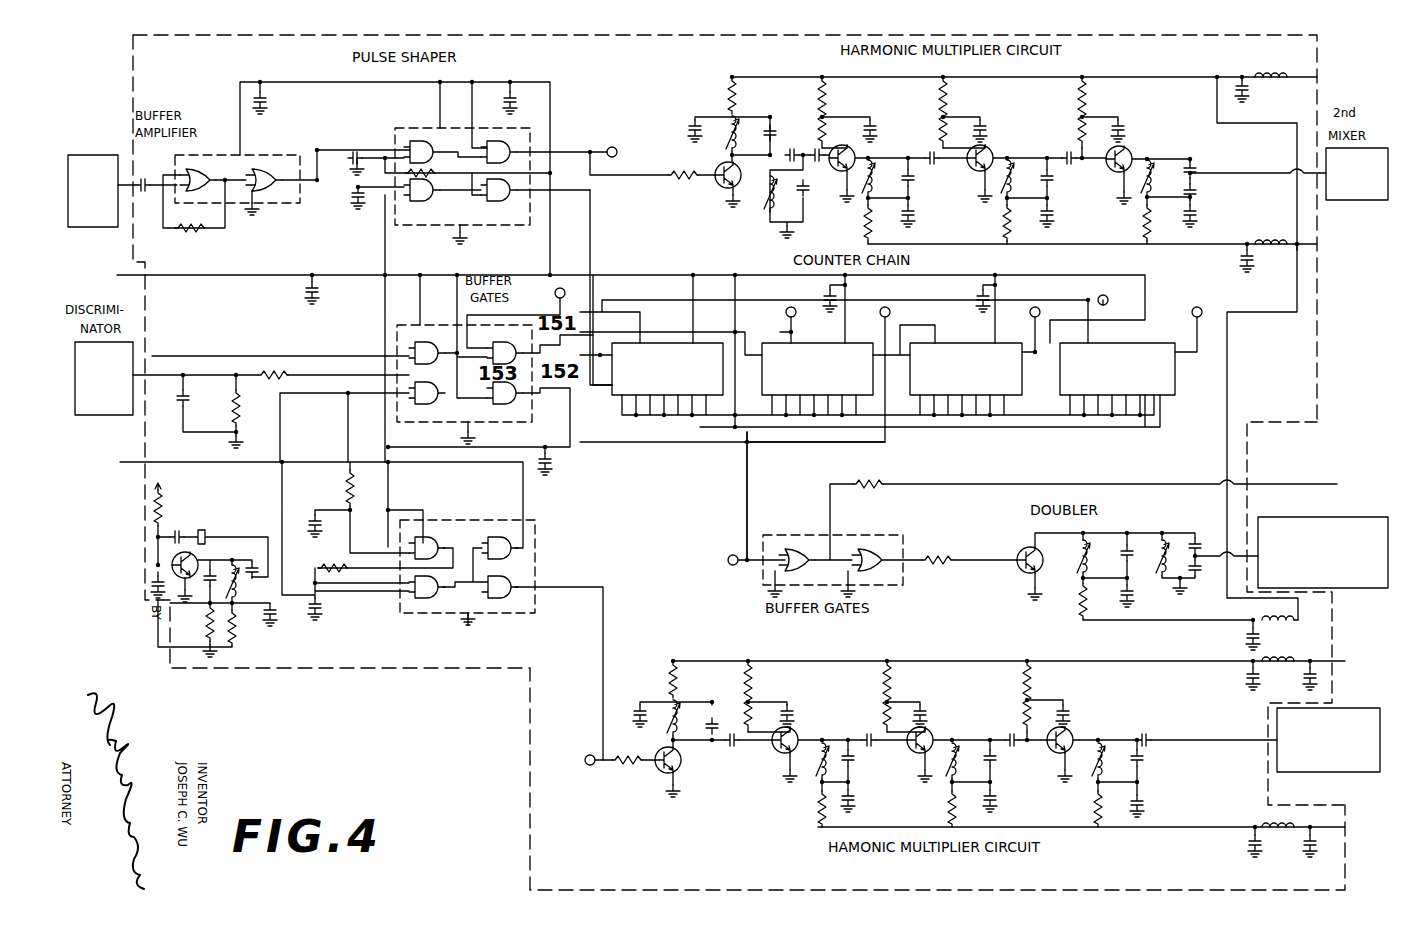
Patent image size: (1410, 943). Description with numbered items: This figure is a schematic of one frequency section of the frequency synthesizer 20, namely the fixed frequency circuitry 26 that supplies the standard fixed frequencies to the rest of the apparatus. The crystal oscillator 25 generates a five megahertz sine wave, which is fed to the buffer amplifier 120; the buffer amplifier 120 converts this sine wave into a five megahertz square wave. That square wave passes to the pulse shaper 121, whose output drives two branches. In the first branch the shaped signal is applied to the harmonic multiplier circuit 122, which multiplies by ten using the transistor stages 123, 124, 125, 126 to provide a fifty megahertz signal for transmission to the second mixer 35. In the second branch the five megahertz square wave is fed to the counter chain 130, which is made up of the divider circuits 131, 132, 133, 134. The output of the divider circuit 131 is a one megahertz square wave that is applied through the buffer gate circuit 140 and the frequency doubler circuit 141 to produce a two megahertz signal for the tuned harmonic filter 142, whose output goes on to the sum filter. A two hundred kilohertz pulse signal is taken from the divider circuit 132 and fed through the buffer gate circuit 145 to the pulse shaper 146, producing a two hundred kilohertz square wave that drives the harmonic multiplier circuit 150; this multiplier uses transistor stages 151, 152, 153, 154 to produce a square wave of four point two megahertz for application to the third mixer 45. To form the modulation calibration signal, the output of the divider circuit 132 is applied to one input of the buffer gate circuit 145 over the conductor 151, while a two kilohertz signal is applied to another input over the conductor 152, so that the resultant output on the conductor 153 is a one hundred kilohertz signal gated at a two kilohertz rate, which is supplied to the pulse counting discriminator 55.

The frequency synthesizer 20 is at (1341, 345).
The crystal oscillator 25 is at (108, 203).
The fixed frequency circuitry 26 is at (1305, 420).
The second mixer 35 is at (1372, 187).
The third mixer 45 is at (1305, 772).
The pulse counting discriminator 55 is at (120, 390).
The buffer amplifier 120 is at (288, 197).
The pulse shaper 121 is at (503, 236).
The harmonic multiplier circuit 122 is at (773, 77).
The transistor stage 123 is at (720, 190).
The transistor stage 124 is at (838, 175).
The transistor stage 125 is at (988, 148).
The transistor stage 126 is at (1130, 150).
The counter chain 130 is at (1073, 267).
The divider circuit 131 is at (698, 381).
The divider circuit 132 is at (848, 381).
The divider circuit 133 is at (996, 381).
The divider circuit 134 is at (1148, 381).
The buffer gate circuit 140 is at (880, 535).
The frequency doubler circuit 141 is at (1158, 532).
The tuned harmonic filter 142 is at (1293, 517).
The buffer gate circuit 145 is at (397, 335).
The pulse shaper 146 is at (538, 548).
The harmonic multiplier circuit 150 is at (995, 656).
The conductor 151 is at (660, 772).
The conductor 152 is at (776, 763).
The conductor 153 is at (930, 738).
The transistor 154 is at (1072, 738).